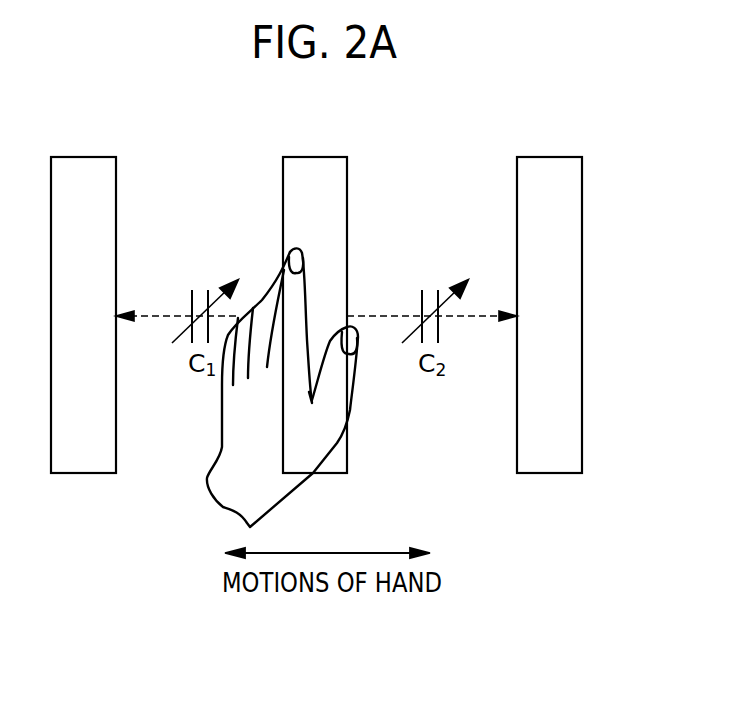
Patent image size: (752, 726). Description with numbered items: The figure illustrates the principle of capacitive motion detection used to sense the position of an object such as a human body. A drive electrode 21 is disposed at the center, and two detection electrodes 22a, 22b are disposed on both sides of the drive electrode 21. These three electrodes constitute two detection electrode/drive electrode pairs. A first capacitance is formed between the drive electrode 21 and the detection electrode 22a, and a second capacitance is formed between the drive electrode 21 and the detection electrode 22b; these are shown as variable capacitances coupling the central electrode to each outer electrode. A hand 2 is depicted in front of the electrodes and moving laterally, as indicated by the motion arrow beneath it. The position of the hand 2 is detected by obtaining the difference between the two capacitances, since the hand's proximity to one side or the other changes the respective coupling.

The detection electrode 22a is at (102, 164).
The drive electrode 21 is at (332, 164).
The detection electrode 22b is at (568, 164).
The hand 2 is at (325, 427).